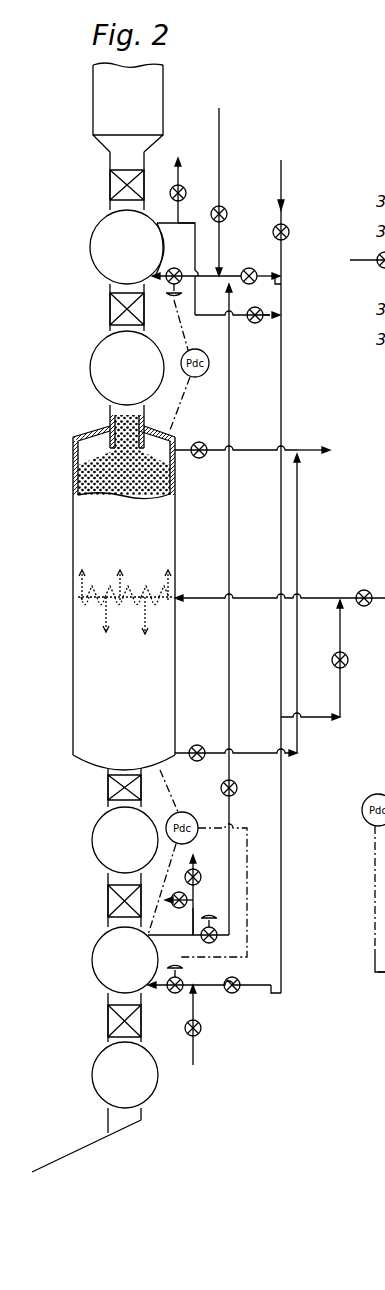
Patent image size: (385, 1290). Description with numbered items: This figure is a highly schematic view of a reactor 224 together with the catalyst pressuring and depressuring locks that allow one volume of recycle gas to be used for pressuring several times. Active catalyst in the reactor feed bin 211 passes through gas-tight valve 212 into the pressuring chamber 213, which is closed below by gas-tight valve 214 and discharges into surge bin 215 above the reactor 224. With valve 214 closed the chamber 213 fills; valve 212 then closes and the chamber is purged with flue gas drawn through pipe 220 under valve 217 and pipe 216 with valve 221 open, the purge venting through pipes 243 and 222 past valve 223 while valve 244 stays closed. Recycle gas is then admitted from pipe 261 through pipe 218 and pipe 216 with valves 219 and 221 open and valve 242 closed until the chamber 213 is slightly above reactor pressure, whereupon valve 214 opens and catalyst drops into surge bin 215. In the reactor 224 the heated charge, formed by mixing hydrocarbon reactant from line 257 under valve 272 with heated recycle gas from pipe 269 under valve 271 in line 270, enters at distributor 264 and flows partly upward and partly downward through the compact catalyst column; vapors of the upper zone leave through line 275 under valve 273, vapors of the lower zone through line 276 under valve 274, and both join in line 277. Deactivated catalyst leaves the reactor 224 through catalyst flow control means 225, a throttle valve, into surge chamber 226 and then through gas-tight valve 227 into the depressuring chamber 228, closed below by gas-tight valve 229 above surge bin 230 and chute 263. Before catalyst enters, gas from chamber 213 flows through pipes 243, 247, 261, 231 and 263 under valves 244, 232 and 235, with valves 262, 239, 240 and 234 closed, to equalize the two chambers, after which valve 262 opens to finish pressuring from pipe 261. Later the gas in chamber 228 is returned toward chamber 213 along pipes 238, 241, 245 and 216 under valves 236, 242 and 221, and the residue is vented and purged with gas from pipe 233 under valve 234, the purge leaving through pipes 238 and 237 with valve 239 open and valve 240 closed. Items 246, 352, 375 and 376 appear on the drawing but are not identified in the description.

The reactor feed bin 211 is at (128, 107).
The gas-tight valve 212 is at (110, 188).
The pressuring chamber 213 is at (127, 247).
The gas-tight valve 214 is at (110, 310).
The surge bin 215 is at (127, 368).
The pipe 216 is at (231, 274).
The valve 217 is at (228, 214).
The pipe 218 is at (280, 284).
The valve 219 is at (258, 272).
The pipe 220 is at (220, 118).
The valve 221 is at (182, 259).
The pipe 222 is at (187, 205).
The valve 223 is at (184, 180).
The reactor 224 is at (73, 533).
The catalyst flow control means 225 is at (108, 795).
The surge chamber 226 is at (125, 840).
The gas-tight valve 227 is at (108, 902).
The depressuring chamber 228 is at (125, 960).
The gas-tight valve 229 is at (108, 1017).
The surge bin 230 is at (125, 1075).
The pipe 231 is at (279, 996).
The valve 232 is at (236, 995).
The pipe 233 is at (196, 1052).
The valve 234 is at (201, 1030).
The valve 235 is at (170, 995).
The valve 236 is at (218, 926).
The pipe 237 is at (192, 912).
The pipe 238 is at (160, 937).
The valve 239 is at (188, 897).
The valve 240 is at (202, 875).
The pipe 241 is at (231, 816).
The valve 242 is at (235, 787).
The pipe 243 is at (192, 221).
The valve 244 is at (256, 324).
The pipe 245 is at (231, 508).
The line 246 is at (229, 294).
The pipe 247 is at (265, 313).
The line 257 is at (356, 658).
The pipe 261 is at (283, 172).
The valve 262 is at (287, 230).
The pipe and chute 263 is at (57, 1153).
The distributor 264 is at (143, 578).
The pipe 269 is at (342, 699).
The line 270 is at (320, 596).
The valve 271 is at (348, 660).
The valve 272 is at (365, 588).
The valve 273 is at (200, 441).
The valve 274 is at (200, 745).
The line 275 is at (246, 445).
The line 276 is at (300, 660).
The line 277 is at (310, 445).
The line 352 is at (355, 262).
The control line 375 is at (378, 945).
The line 376 is at (372, 988).